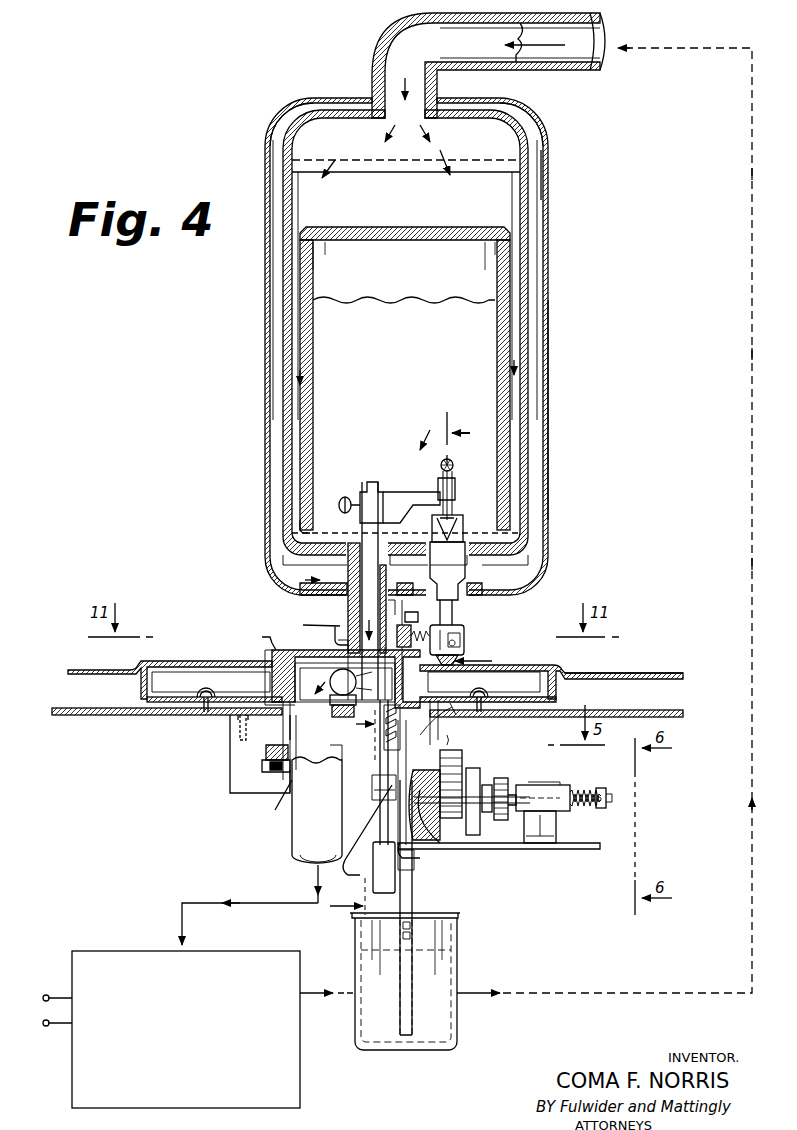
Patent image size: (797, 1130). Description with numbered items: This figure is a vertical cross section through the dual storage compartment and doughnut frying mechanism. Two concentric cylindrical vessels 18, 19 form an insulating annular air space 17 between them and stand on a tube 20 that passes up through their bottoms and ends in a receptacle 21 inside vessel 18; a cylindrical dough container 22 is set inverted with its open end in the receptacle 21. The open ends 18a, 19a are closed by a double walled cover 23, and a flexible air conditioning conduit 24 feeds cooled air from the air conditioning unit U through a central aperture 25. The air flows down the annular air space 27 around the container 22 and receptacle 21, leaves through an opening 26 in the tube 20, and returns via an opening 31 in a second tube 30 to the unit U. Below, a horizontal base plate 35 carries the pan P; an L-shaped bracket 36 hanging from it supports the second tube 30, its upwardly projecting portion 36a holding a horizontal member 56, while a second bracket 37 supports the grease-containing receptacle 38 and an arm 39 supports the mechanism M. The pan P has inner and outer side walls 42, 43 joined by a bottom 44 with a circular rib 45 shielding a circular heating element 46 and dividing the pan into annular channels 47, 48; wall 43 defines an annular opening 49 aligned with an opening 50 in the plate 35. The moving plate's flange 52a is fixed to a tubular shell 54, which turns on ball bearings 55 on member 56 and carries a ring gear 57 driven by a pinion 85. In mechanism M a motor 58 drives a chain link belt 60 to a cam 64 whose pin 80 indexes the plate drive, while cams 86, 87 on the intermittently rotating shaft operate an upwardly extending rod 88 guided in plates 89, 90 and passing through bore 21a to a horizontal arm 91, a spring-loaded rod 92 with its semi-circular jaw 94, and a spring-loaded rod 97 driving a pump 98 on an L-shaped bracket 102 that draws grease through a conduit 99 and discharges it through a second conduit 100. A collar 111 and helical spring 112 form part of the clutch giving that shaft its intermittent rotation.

The annular air space 17 is at (535, 385).
The inner vessel 18 is at (548, 490).
The open end of inner vessel 18a is at (520, 180).
The outer vessel 19 is at (548, 520).
The open end of outer vessel 19a is at (548, 180).
The tube 20 is at (335, 604).
The receptacle 21 is at (292, 522).
The bore 21a is at (352, 528).
The cylindrical dough container 22 is at (318, 278).
The double walled cover 23 is at (540, 140).
The flexible air conditioning conduit 24 is at (548, 70).
The aperture 25 is at (437, 92).
The opening 26 is at (348, 568).
The annular air space 27 is at (512, 410).
The second tube 30 is at (283, 728).
The opening 31 is at (340, 660).
The base plate 35 is at (670, 712).
The L-shaped bracket 36 is at (252, 806).
The upwardly projecting portion of bracket 36a is at (330, 800).
The second bracket 37 is at (413, 882).
The grease-containing receptacle 38 is at (458, 970).
The arm 39 is at (470, 850).
The inner side wall 42 is at (140, 683).
The outer side wall 43 is at (272, 656).
The bottom 44 is at (160, 716).
The circular rib 45 is at (203, 690).
The circular heating element 46 is at (210, 708).
The annular channel 47 is at (450, 710).
The annular channel 48 is at (495, 665).
The vertical annular opening 49 is at (335, 695).
The opening 50 is at (266, 752).
The annular flange 52a is at (262, 633).
The tubular shell 54 is at (275, 712).
The ball bearings 55 is at (262, 766).
The horizontally disposed member 56 is at (271, 809).
The ring gear 57 is at (462, 736).
The motor 58 is at (560, 833).
The endless chain link belt 60 is at (512, 778).
The cam 64 is at (482, 830).
The pin 80 is at (480, 770).
The second pinion 85 is at (430, 855).
The cam 86 is at (380, 826).
The cam 87 is at (385, 838).
The upwardly extending rod 88 is at (378, 478).
The plate 89 is at (332, 705).
The plate 90 is at (335, 717).
The horizontal arm 91 is at (420, 483).
The spring-loaded rod 92 is at (410, 620).
The semi-circular jaw 94 is at (466, 625).
The spring-loaded rod 97 is at (331, 885).
The pump 98 is at (384, 867).
The conduit 99 is at (365, 926).
The second conduit 100 is at (340, 624).
The L-shaped bracket 102 is at (412, 897).
The collar 111 is at (606, 790).
The helical spring 112 is at (583, 808).
The mechanism M is at (548, 782).
The pan P is at (560, 690).
The air conditioning unit U is at (192, 1029).